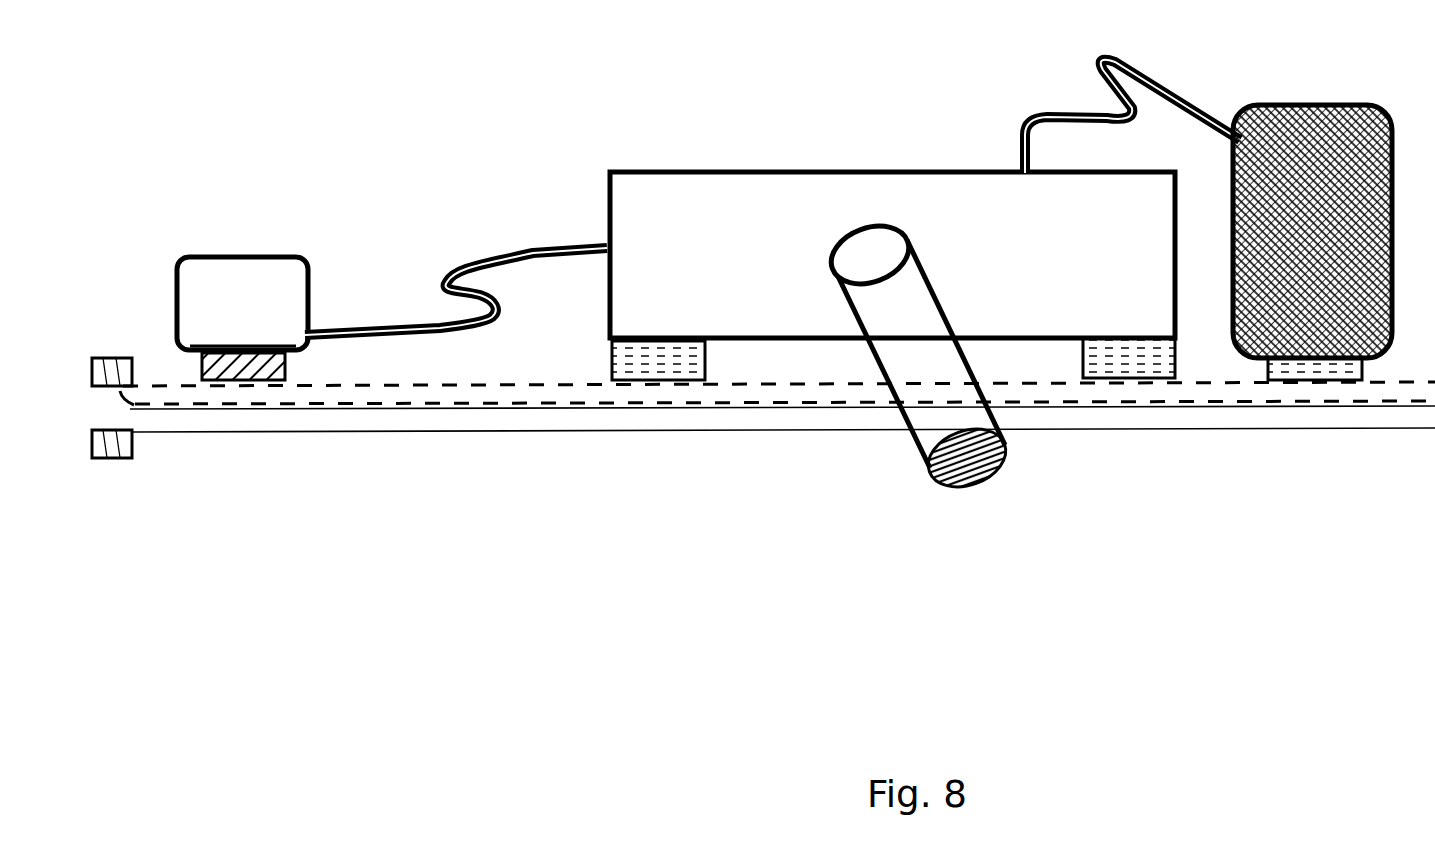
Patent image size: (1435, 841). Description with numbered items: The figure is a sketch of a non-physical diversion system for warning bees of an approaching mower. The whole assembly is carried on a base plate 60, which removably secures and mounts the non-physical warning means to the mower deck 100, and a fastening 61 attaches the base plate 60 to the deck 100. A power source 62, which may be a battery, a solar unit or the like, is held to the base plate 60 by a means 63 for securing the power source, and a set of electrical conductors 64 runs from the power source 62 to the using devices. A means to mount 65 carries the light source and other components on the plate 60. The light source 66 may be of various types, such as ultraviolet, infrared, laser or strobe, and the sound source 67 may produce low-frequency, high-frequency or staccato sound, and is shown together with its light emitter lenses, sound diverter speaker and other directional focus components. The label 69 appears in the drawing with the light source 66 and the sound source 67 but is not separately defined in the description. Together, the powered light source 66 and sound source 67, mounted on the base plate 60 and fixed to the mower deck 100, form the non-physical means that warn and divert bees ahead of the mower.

The base plate 60 is at (415, 408).
The fastening 61 is at (113, 355).
The power source 62 is at (248, 380).
The means to secure power source 63 is at (235, 258).
The set of electrical conductors 64 is at (493, 257).
The means to mount light source 65 is at (665, 358).
The light source 66 is at (757, 165).
The sound source 67 is at (920, 443).
The supply tank with feed line 69 is at (1208, 220).
The mower deck 100 is at (183, 422).